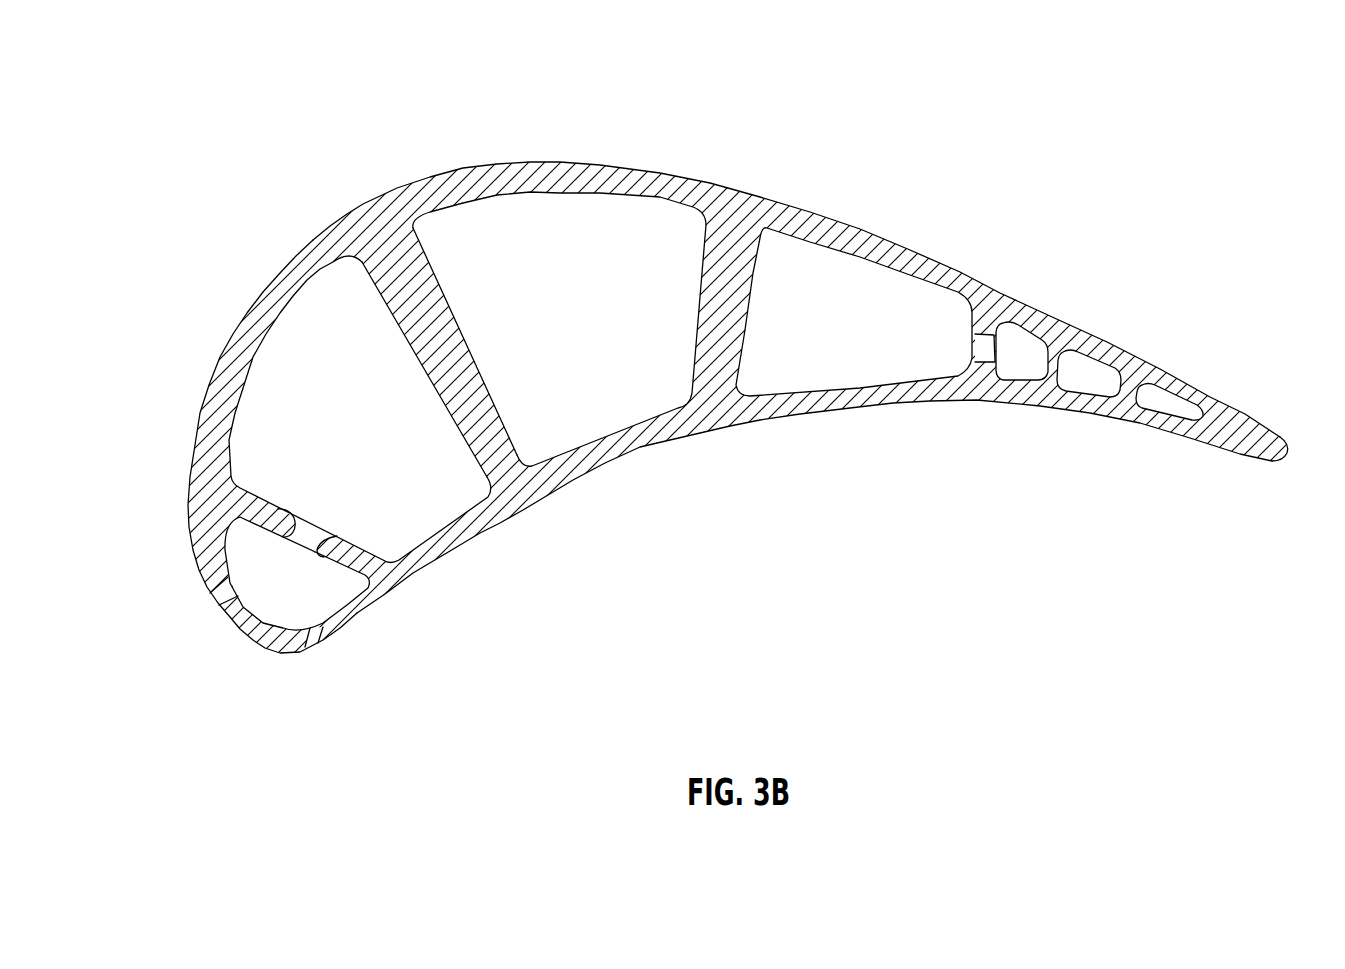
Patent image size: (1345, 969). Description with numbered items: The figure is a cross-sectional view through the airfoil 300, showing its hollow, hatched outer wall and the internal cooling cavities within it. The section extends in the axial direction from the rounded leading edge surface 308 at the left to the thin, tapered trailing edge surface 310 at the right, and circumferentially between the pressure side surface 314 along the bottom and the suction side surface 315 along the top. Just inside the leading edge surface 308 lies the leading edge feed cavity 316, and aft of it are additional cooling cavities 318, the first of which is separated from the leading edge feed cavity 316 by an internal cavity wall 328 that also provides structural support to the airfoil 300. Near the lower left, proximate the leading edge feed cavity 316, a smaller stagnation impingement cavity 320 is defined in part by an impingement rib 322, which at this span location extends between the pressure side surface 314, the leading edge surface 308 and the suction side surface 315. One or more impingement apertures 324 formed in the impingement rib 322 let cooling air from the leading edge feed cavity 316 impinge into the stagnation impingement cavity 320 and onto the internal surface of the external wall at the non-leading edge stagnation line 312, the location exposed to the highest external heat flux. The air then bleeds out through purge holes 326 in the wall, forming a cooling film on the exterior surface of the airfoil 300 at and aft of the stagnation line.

The airfoil 300 is at (188, 63).
The leading edge surface 308 is at (244, 642).
The trailing edge surface 310 is at (1262, 426).
The non-leading edge stagnation line 312 is at (245, 652).
The pressure side surface 314 is at (645, 450).
The suction side surface 315 is at (720, 184).
The leading edge feed cavity 316 is at (380, 438).
The additional cooling cavities 318 is at (597, 328).
The stagnation impingement cavity 320 is at (307, 603).
The impingement rib 322 is at (258, 500).
The impingement apertures 324 is at (311, 531).
The purge holes 326 is at (203, 603).
The internal cavity wall 328 is at (433, 312).